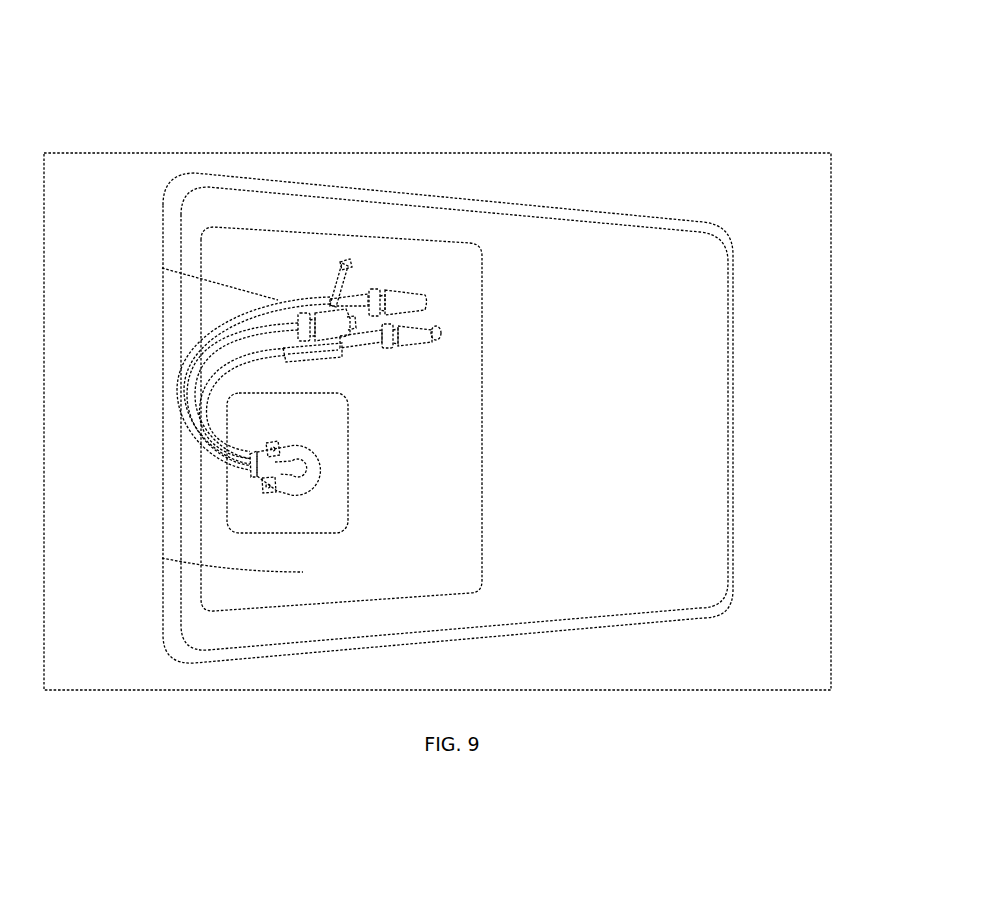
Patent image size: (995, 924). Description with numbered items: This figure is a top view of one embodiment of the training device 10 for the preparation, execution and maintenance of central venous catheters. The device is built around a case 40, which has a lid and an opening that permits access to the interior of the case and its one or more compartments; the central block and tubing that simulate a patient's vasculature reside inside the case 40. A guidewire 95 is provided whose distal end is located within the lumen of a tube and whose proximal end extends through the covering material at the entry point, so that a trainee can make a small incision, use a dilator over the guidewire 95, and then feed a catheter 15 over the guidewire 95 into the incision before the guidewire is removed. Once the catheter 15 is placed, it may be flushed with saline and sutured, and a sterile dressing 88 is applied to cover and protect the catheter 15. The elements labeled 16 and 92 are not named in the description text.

The training device 10 is at (352, 100).
The catheter 15 is at (254, 462).
The connectors 16 is at (408, 298).
The case 40 is at (656, 300).
The sterile dressing 88 is at (328, 512).
The elbow fitting 92 is at (303, 478).
The guidewire 95 is at (180, 212).